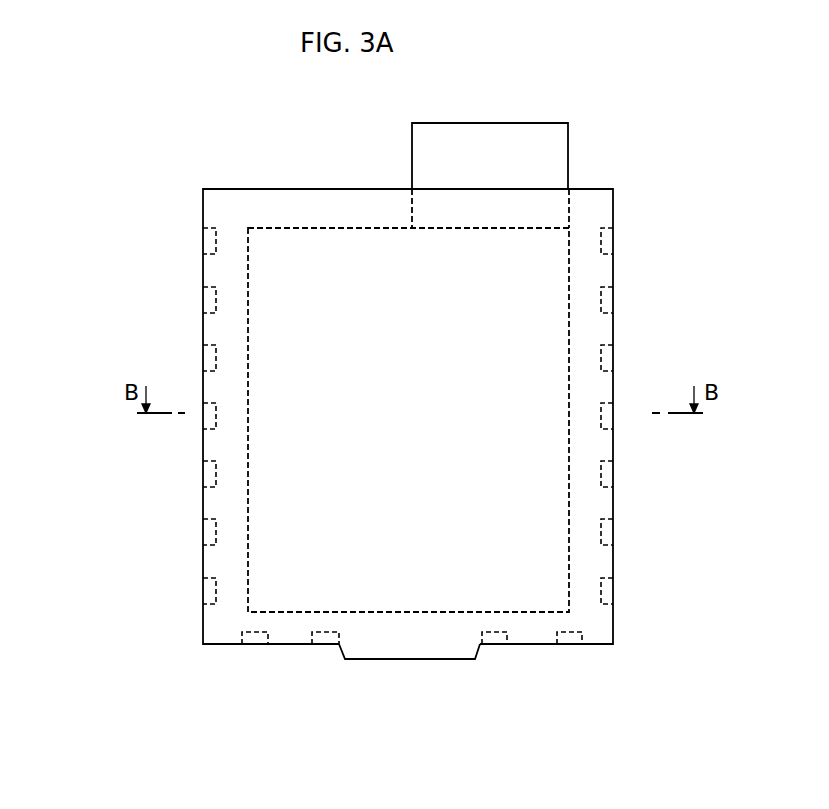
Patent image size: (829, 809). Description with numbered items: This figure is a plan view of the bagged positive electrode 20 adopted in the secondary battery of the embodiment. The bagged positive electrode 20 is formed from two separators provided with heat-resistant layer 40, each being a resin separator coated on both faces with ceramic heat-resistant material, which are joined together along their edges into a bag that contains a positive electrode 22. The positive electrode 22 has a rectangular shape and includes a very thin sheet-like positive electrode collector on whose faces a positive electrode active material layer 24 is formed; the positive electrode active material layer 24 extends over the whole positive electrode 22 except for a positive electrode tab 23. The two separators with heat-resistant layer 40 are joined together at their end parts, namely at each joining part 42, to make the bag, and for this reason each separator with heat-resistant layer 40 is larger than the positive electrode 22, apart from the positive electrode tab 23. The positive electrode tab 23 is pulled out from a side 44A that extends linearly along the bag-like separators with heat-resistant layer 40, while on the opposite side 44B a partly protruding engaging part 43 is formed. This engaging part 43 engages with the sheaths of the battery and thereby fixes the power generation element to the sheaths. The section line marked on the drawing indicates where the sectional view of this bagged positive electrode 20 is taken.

The bagged positive electrode 20 is at (136, 168).
The positive electrode 22 is at (279, 246).
The positive electrode tab 23 is at (561, 149).
The positive electrode active material layer 24 is at (555, 357).
The separator provided with heat-resistant layer 40 is at (606, 205).
The joining part 42 is at (612, 587).
The engaging part 43 is at (412, 651).
The side 44A is at (352, 189).
The side 44B is at (288, 646).